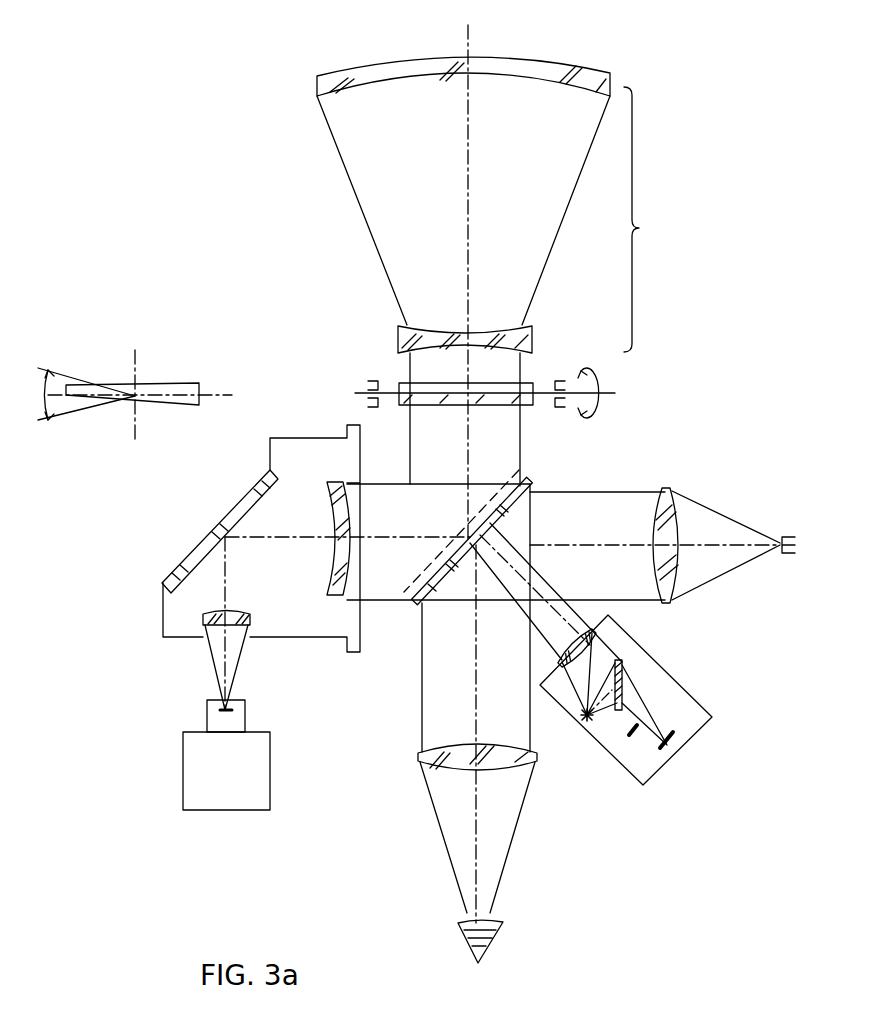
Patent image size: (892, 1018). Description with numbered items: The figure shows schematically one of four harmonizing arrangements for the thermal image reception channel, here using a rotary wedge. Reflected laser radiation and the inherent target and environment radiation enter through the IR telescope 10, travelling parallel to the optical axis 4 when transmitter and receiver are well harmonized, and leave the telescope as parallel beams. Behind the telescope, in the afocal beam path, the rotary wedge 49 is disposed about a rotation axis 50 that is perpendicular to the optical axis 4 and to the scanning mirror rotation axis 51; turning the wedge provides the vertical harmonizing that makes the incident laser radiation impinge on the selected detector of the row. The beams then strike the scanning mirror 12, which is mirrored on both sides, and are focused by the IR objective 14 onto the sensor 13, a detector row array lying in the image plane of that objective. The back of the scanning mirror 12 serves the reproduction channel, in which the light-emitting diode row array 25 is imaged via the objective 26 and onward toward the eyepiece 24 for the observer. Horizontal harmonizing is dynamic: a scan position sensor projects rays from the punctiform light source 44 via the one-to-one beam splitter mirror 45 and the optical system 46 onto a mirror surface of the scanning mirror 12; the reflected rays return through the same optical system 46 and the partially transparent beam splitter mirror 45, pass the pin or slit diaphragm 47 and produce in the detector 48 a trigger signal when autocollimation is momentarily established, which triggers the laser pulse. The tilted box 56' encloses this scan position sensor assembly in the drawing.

The optical axis 4 is at (468, 44).
The IR telescope 10 is at (493, 205).
The scanning mirror 12 is at (530, 480).
The sensor 13 is at (232, 720).
The IR objective 14 is at (218, 613).
The eyepiece 24 is at (418, 755).
The light-emitting diode row array 25 is at (782, 537).
The objective 26 is at (660, 522).
The punctiform light source 44 is at (586, 719).
The beam splitter mirror 45 is at (622, 664).
The optical system 46 is at (598, 632).
The pin or slit diaphragm 47 is at (656, 712).
The detector 48 is at (674, 744).
The rotary wedge 49 is at (400, 383).
The rotation axis 50 is at (610, 393).
The scanning mirror rotation axis 51 is at (490, 535).
The scanner housing 56' is at (626, 719).